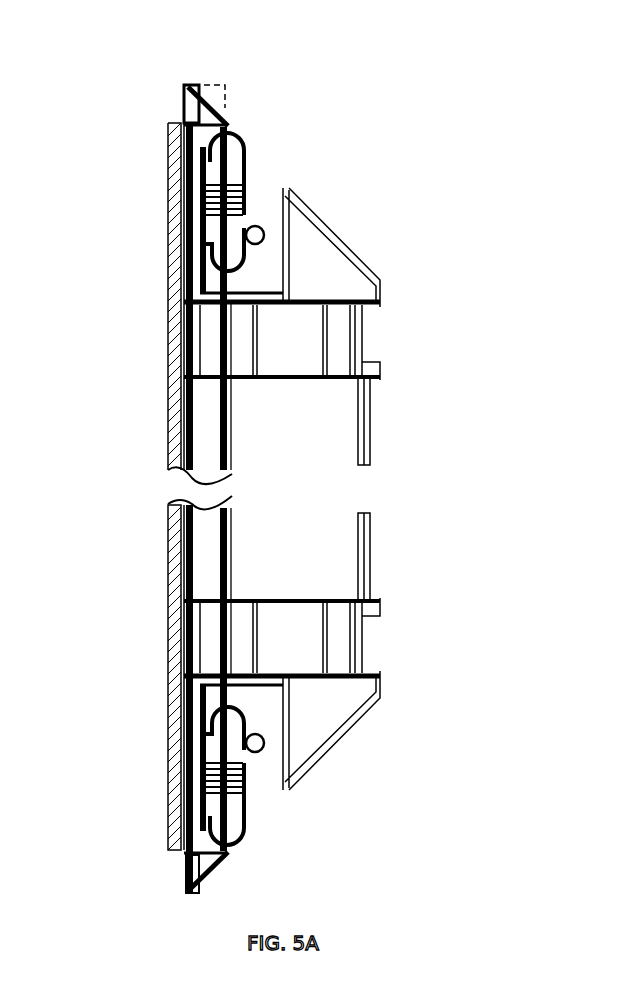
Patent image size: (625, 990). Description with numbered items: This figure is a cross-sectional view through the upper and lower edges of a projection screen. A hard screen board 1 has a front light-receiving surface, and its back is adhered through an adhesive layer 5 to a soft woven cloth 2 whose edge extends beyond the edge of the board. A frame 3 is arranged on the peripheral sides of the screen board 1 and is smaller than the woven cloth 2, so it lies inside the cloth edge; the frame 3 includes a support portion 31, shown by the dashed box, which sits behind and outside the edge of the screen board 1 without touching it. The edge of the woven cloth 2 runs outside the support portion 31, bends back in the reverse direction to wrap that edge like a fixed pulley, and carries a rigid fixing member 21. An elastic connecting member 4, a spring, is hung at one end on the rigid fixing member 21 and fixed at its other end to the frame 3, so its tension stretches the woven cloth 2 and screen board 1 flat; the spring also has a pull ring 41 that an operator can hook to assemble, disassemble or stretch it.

The hard screen board 1 is at (170, 535).
The soft woven cloth 2 is at (192, 103).
The frame 3 is at (335, 360).
The elastic connecting member 4 is at (238, 192).
The adhesive layer 5 is at (183, 352).
The rigid fixing member 21 is at (226, 147).
The support portion 31 is at (200, 88).
The pull ring 41 is at (262, 228).